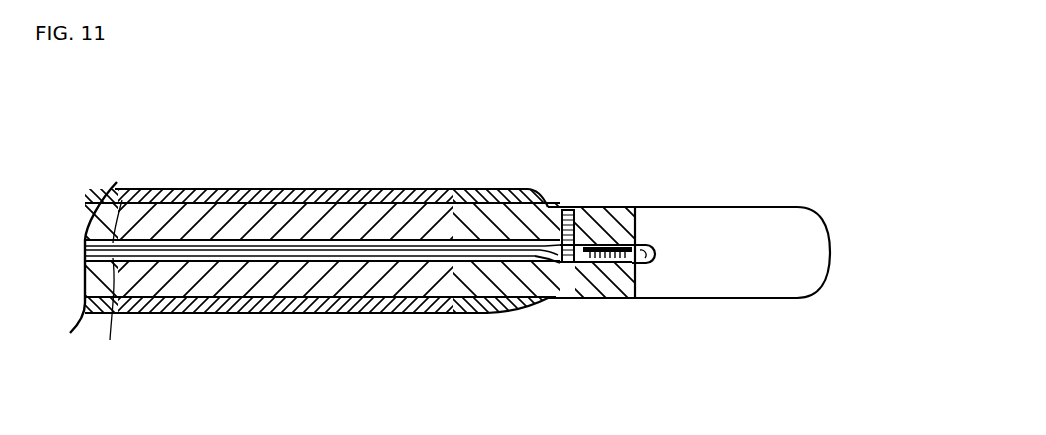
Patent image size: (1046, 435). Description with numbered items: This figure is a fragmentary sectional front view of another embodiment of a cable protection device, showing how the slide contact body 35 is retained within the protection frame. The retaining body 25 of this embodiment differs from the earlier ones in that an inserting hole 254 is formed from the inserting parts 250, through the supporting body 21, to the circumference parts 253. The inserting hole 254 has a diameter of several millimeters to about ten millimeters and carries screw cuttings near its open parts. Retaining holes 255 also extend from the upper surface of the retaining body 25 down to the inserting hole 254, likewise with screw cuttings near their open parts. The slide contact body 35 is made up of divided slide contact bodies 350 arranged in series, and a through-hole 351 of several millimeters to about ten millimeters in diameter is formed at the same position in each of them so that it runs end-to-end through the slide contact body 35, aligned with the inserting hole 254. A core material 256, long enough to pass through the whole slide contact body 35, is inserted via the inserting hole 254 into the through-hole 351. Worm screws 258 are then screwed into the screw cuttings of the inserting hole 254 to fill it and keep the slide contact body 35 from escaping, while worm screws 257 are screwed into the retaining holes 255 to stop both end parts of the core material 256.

The supporting body 21 is at (355, 186).
The retaining body 25 is at (740, 205).
The slide contact body 35 is at (107, 378).
The inserting parts 250 is at (500, 314).
The circumference parts 253 is at (718, 285).
The inserting hole 254 is at (549, 265).
The retaining holes 255 is at (566, 208).
The core material 256 is at (209, 244).
The worm screws 257 is at (577, 207).
The worm screws 258 is at (645, 264).
The divided slide contact bodies 350 is at (108, 314).
The through-hole 351 is at (316, 260).